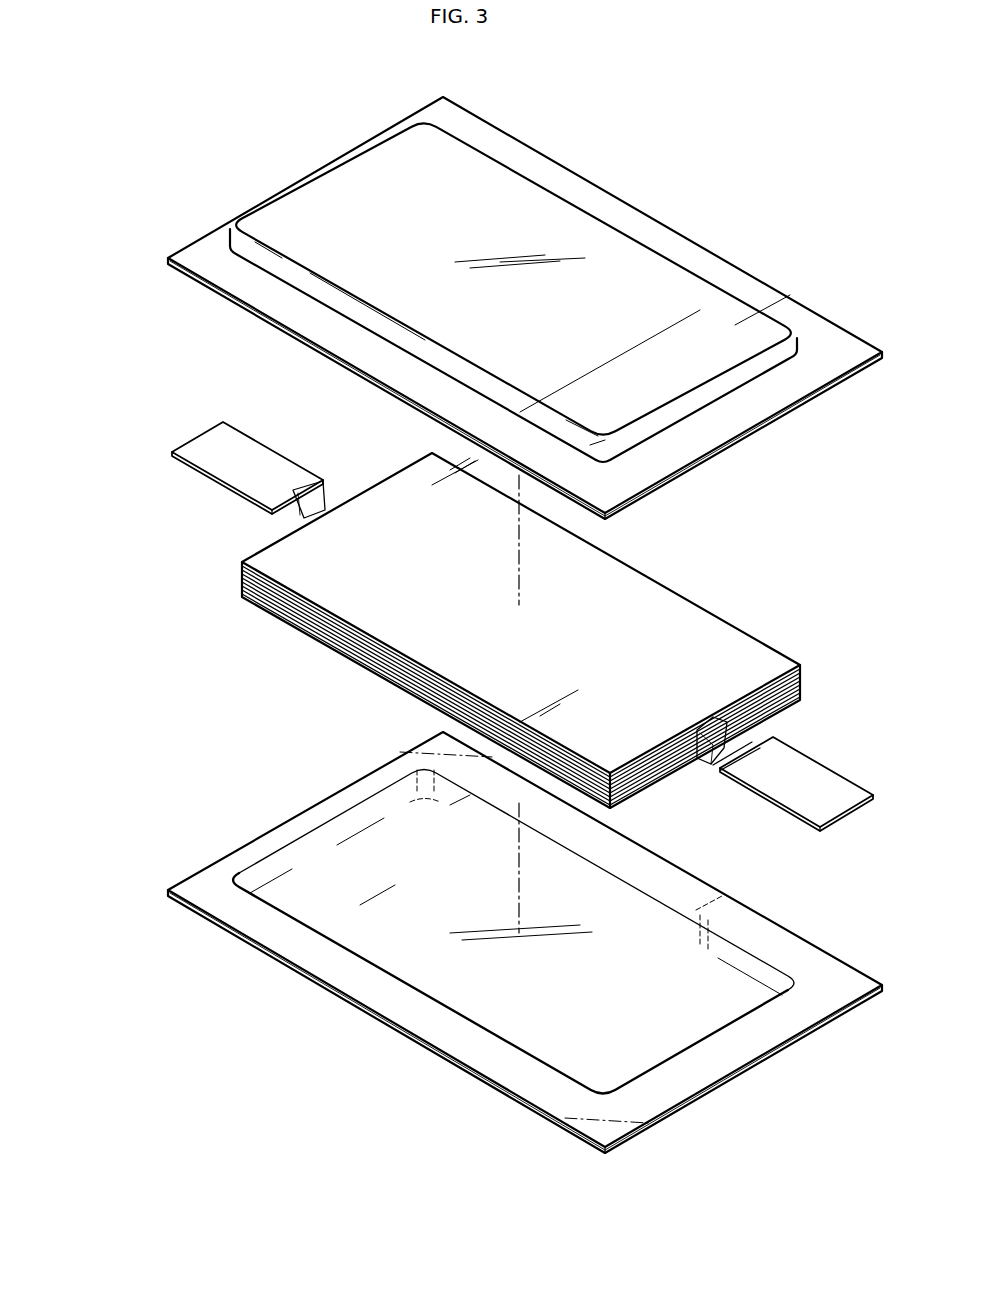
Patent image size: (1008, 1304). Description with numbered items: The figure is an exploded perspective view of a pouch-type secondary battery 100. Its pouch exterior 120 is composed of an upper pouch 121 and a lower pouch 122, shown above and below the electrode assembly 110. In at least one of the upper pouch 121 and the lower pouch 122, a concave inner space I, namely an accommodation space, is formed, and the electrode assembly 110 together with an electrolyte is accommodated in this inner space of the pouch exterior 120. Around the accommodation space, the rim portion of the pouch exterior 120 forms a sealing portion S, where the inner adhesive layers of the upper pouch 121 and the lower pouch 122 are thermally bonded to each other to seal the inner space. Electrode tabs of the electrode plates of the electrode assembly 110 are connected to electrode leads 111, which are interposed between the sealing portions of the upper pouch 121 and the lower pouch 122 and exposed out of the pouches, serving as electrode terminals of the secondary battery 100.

The pouch-type secondary battery 100 is at (631, 122).
The electrode assembly 110 is at (712, 625).
The electrode lead 111 is at (262, 457).
The pouch exterior 120 is at (98, 277).
The upper pouch 121 is at (200, 259).
The lower pouch 122 is at (203, 888).
The inner space I is at (668, 268).
The sealing portion S is at (835, 336).